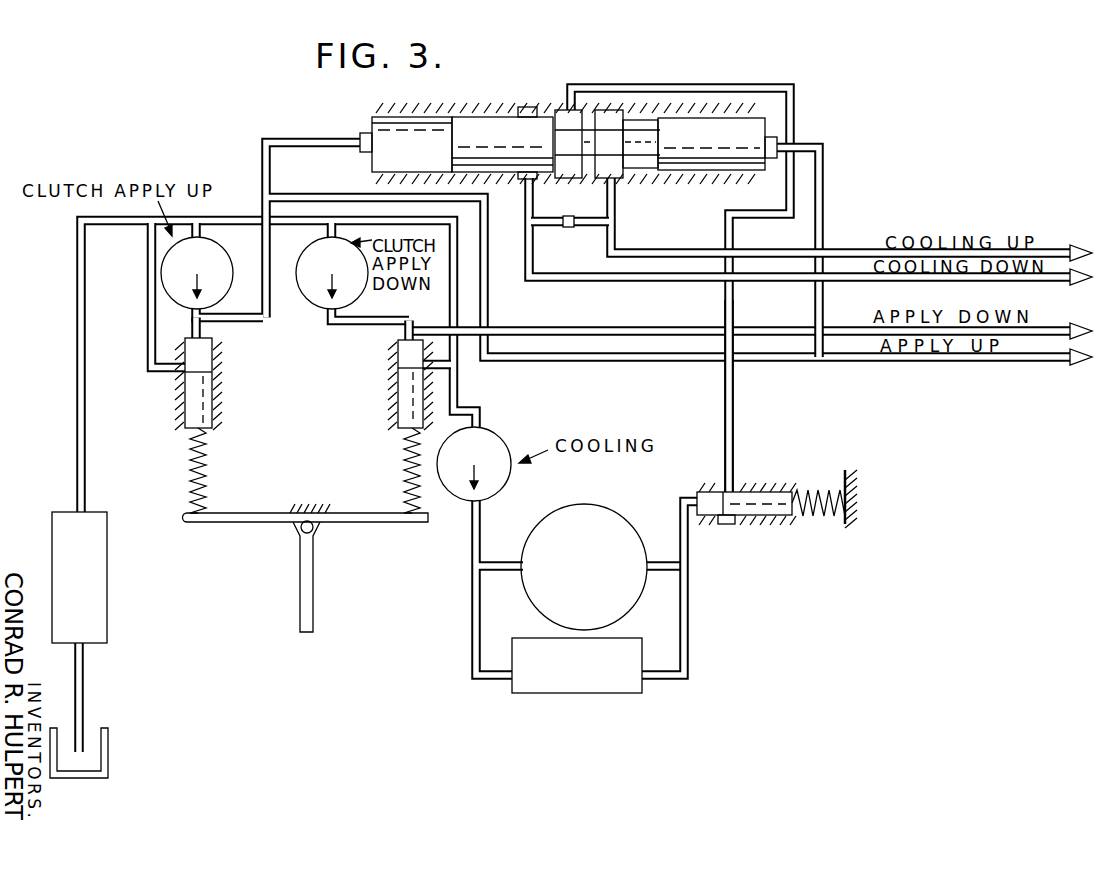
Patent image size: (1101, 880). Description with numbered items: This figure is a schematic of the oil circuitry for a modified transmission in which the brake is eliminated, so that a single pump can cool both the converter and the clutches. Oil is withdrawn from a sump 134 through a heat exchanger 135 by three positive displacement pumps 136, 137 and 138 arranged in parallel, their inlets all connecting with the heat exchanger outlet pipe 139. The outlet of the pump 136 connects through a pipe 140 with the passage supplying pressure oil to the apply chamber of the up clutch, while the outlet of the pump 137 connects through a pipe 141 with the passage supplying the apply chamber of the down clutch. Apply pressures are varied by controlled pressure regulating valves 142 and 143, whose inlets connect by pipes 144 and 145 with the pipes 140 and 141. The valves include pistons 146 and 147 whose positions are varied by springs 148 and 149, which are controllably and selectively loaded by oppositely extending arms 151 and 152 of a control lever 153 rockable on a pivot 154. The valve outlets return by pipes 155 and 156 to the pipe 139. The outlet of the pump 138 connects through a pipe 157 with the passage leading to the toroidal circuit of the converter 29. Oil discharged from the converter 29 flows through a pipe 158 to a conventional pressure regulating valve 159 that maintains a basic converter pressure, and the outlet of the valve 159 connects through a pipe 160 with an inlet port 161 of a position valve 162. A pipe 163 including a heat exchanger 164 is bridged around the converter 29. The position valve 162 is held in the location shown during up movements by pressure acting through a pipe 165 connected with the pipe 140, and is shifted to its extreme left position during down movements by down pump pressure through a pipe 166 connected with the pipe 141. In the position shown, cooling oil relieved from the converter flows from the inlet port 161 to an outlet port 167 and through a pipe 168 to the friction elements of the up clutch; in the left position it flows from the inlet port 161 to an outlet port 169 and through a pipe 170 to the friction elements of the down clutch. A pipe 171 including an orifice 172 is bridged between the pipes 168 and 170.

The converter 29 is at (593, 515).
The sump 134 is at (108, 758).
The heat exchanger 135 is at (107, 575).
The pump 136 is at (232, 265).
The pump 137 is at (324, 312).
The pump 138 is at (492, 428).
The heat exchanger outlet pipe 139 is at (77, 283).
The pipe 140 is at (240, 323).
The pipe 141 is at (386, 318).
The pressure regulating valve 142 is at (203, 384).
The pressure regulating valve 143 is at (385, 390).
The pipe 144 is at (192, 330).
The pipe 145 is at (406, 335).
The piston 146 is at (185, 403).
The piston 147 is at (400, 408).
The spring 148 is at (190, 462).
The spring 149 is at (405, 470).
The arm 151 is at (242, 523).
The arm 152 is at (370, 523).
The control lever 153 is at (313, 593).
The pivot 154 is at (293, 533).
The pipe 155 is at (148, 352).
The pipe 156 is at (436, 374).
The pipe 157 is at (482, 548).
The pipe 158 is at (650, 572).
The pressure regulating valve 159 is at (748, 526).
The pipe 160 is at (734, 428).
The inlet port 161 is at (553, 93).
The position valve 162 is at (483, 104).
The pipe 163 is at (662, 682).
The heat exchanger 164 is at (578, 695).
The pipe 165 is at (296, 137).
The pipe 166 is at (824, 193).
The outlet port 167 is at (625, 182).
The pipe 168 is at (657, 250).
The outlet port 169 is at (518, 183).
The pipe 170 is at (594, 282).
The pipe 171 is at (569, 228).
The orifice 172 is at (570, 246).